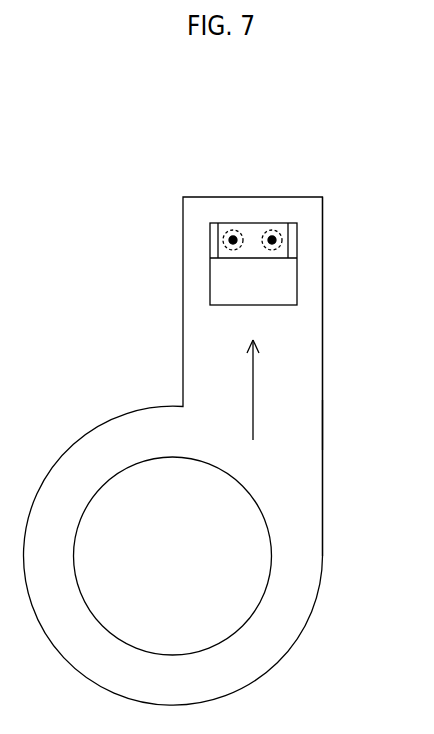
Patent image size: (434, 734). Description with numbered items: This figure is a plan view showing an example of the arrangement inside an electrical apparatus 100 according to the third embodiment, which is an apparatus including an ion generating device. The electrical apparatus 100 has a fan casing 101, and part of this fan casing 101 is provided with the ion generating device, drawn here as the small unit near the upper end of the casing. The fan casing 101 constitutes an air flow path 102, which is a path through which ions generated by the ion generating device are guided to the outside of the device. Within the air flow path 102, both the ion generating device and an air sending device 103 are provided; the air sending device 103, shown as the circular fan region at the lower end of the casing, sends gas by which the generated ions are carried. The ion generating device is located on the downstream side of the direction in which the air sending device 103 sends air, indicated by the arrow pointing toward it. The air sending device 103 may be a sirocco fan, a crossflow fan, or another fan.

The electrical apparatus 100 is at (368, 173).
The fan casing 101 is at (323, 366).
The air flow path 102 is at (322, 427).
The air sending device 103 is at (262, 559).